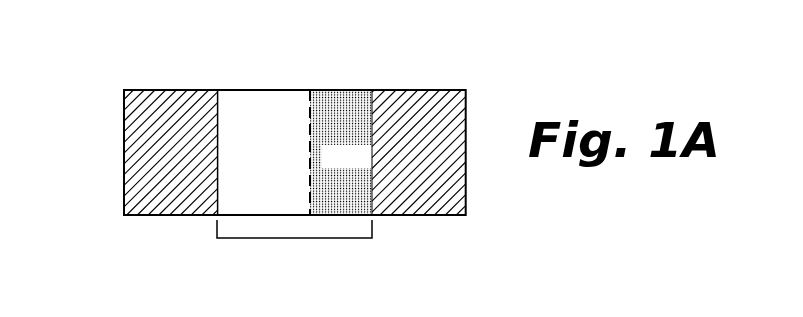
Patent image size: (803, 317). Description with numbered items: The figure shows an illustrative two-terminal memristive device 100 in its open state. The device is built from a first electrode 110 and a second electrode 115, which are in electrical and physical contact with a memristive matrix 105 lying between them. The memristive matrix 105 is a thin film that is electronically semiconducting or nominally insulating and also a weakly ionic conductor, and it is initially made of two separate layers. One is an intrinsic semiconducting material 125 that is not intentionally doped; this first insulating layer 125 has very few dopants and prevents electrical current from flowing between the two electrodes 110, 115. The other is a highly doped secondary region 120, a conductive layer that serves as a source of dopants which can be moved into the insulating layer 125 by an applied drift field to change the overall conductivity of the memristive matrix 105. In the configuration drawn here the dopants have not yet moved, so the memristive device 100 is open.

The two-terminal memristive device 100 is at (128, 56).
The memristive matrix 105 is at (293, 242).
The first electrode 110 is at (162, 204).
The second electrode 115 is at (437, 205).
The highly doped secondary region 120 is at (360, 167).
The intrinsic semiconducting material 125 is at (277, 167).